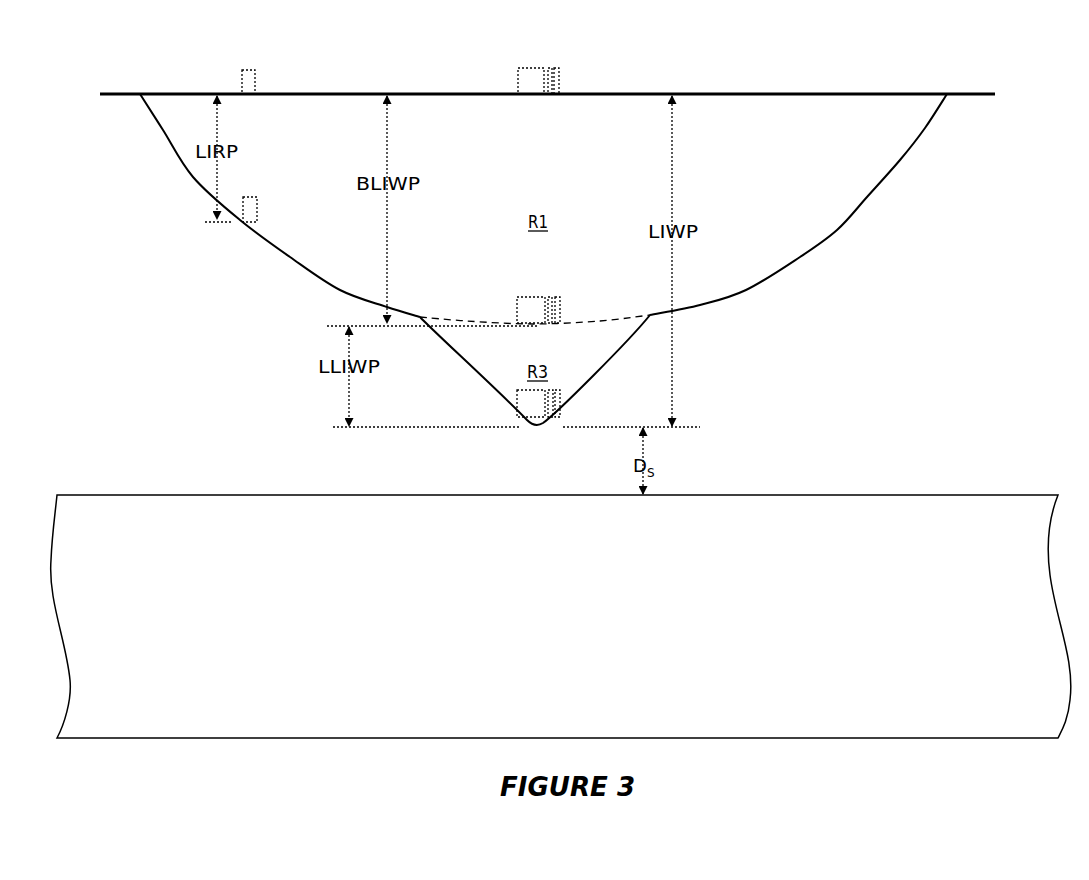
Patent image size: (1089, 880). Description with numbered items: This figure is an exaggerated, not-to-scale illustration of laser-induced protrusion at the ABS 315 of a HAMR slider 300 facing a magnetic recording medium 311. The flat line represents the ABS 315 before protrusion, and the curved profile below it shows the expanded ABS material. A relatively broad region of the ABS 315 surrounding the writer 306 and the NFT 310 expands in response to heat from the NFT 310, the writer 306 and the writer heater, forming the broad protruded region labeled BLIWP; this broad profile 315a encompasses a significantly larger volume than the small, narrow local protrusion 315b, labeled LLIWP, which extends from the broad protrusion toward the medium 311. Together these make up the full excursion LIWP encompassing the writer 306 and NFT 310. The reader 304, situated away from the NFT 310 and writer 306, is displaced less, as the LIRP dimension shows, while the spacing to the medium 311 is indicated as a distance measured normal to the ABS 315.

The HAMR slider 300 is at (580, 47).
The reader 304 is at (257, 76).
The writer 306 is at (517, 78).
The NFT 310 is at (561, 78).
The magnetic recording medium 311 is at (948, 494).
The ABS 315 is at (972, 95).
The outer protrusion profile 315a is at (838, 232).
The localized protrusion profile 315b is at (609, 362).